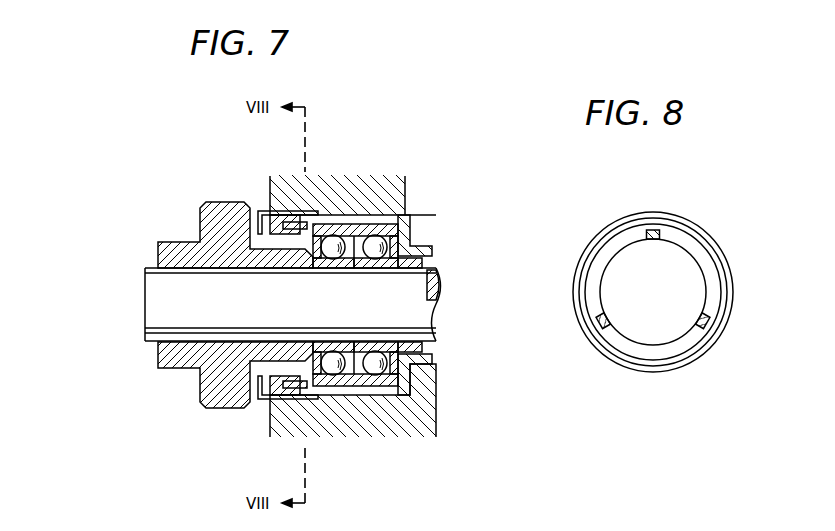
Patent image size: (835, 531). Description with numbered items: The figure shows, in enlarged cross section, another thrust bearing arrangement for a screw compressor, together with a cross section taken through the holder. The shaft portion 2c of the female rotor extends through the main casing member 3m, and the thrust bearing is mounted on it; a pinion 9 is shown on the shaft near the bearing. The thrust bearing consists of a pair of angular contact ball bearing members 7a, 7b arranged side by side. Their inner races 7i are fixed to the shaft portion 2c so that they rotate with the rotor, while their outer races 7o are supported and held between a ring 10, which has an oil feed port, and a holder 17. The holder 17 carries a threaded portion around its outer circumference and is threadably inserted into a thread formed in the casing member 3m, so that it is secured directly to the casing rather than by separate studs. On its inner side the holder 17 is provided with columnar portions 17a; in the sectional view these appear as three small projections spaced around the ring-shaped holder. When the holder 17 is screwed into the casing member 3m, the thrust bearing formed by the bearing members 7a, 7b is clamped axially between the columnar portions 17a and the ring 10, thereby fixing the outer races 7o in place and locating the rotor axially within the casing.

In FIG. 7, the shaft portion 2c is at (148, 318).
In FIG. 7, the pinion 9 is at (200, 385).
In FIG. 7, the main casing member 3m is at (368, 432).
In FIG. 7, the holder 17 is at (263, 222).
In FIG. 8, the holder 17 is at (677, 209).
In FIG. 7, the columnar portions 17a is at (308, 224).
In FIG. 8, the columnar portions 17a is at (661, 232).
In FIG. 7, the outer races 7o is at (355, 226).
In FIG. 7, the angular contact ball bearing member 7a is at (386, 388).
In FIG. 7, the inner races 7i is at (371, 342).
In FIG. 7, the angular contact ball bearing member 7b is at (340, 388).
In FIG. 7, the ring 10 is at (420, 224).